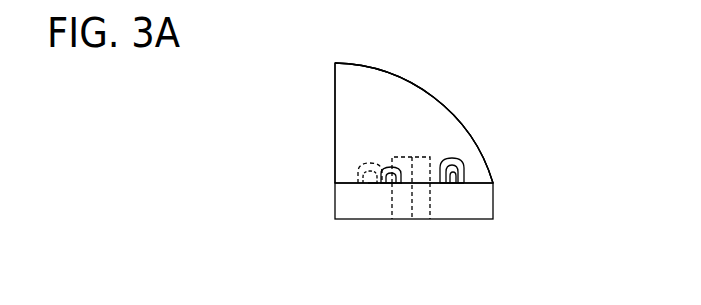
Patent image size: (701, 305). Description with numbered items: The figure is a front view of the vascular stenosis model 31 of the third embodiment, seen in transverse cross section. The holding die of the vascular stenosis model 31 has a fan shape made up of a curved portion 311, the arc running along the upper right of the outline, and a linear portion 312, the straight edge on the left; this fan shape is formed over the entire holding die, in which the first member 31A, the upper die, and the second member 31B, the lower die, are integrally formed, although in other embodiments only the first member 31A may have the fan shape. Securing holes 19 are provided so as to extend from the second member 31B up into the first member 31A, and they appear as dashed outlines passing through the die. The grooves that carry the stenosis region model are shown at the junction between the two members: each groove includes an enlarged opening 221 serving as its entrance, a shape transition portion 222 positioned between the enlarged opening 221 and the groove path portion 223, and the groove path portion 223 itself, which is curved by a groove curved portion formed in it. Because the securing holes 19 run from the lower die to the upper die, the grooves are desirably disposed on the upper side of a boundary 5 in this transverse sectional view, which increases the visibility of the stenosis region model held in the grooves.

The vascular stenosis model 31 is at (380, 52).
The first member 31A is at (350, 83).
The second member 31B is at (463, 213).
The curved portion 311 is at (464, 131).
The linear portion 312 is at (337, 97).
The securing holes 19 is at (402, 157).
The enlarged opening 221 is at (365, 162).
The shape transition portion 222 is at (360, 162).
The groove path portion 223 is at (440, 167).
The boundary 5 is at (340, 179).